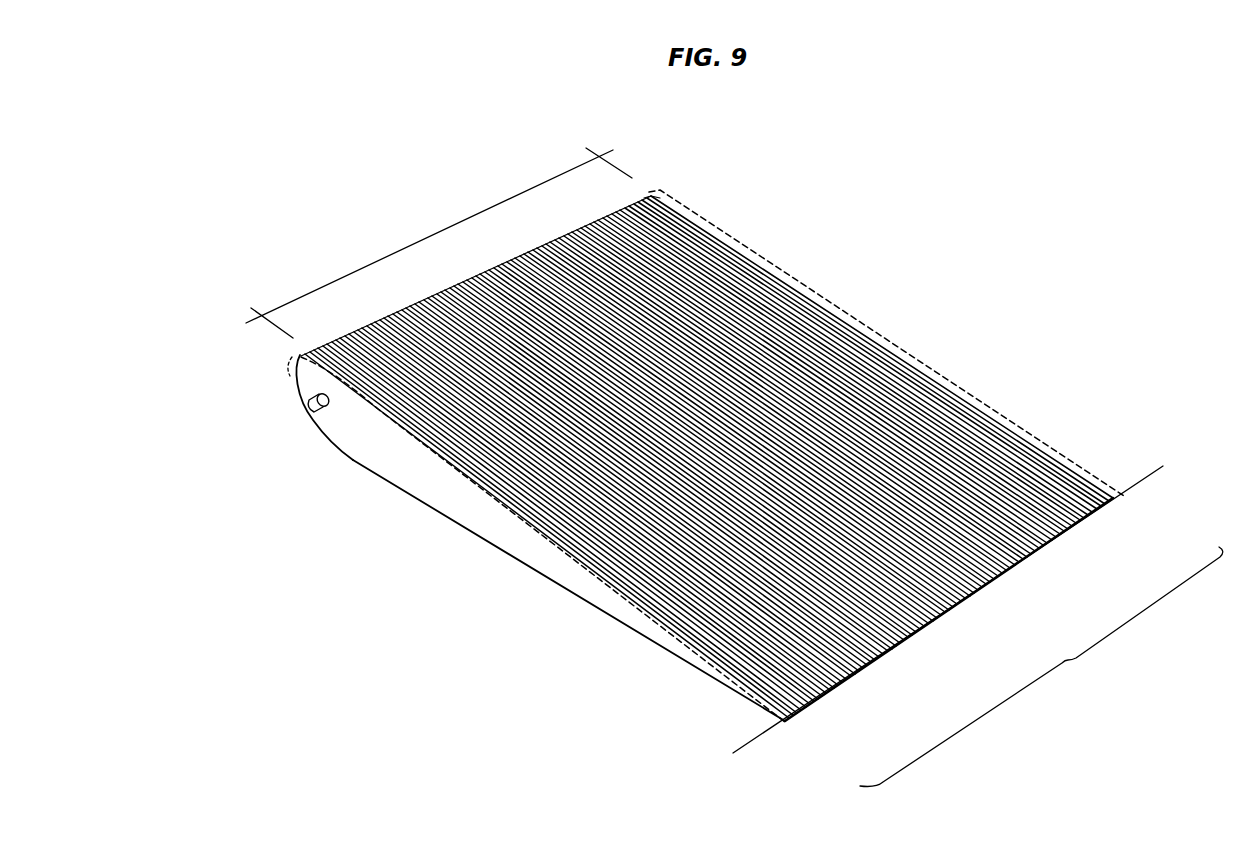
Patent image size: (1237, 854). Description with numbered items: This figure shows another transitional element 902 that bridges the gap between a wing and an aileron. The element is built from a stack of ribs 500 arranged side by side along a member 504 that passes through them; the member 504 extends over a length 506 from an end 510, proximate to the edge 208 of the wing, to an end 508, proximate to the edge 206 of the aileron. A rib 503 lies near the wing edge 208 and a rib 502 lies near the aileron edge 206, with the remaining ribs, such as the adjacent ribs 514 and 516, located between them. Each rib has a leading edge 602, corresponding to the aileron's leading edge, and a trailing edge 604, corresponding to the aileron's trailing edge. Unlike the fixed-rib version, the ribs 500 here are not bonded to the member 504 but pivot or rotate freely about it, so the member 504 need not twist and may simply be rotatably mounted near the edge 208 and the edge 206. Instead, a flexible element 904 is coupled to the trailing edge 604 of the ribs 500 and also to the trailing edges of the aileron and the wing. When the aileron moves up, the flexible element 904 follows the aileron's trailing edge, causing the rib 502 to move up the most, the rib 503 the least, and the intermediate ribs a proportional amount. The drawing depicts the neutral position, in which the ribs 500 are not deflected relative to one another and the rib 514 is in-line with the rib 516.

The transitional element 902 is at (917, 228).
The edge 206 is at (862, 322).
The edge 208 is at (453, 472).
The ribs 500 is at (1041, 667).
The rib 502 is at (1108, 489).
The rib 503 is at (780, 714).
The member 504 is at (313, 404).
The length 506 is at (447, 217).
The end 508 is at (648, 174).
The end 510 is at (264, 353).
The rib 514 is at (1013, 552).
The rib 516 is at (1016, 553).
The leading edge 602 is at (412, 269).
The trailing edge 604 is at (940, 616).
The flexible element 904 is at (1130, 474).